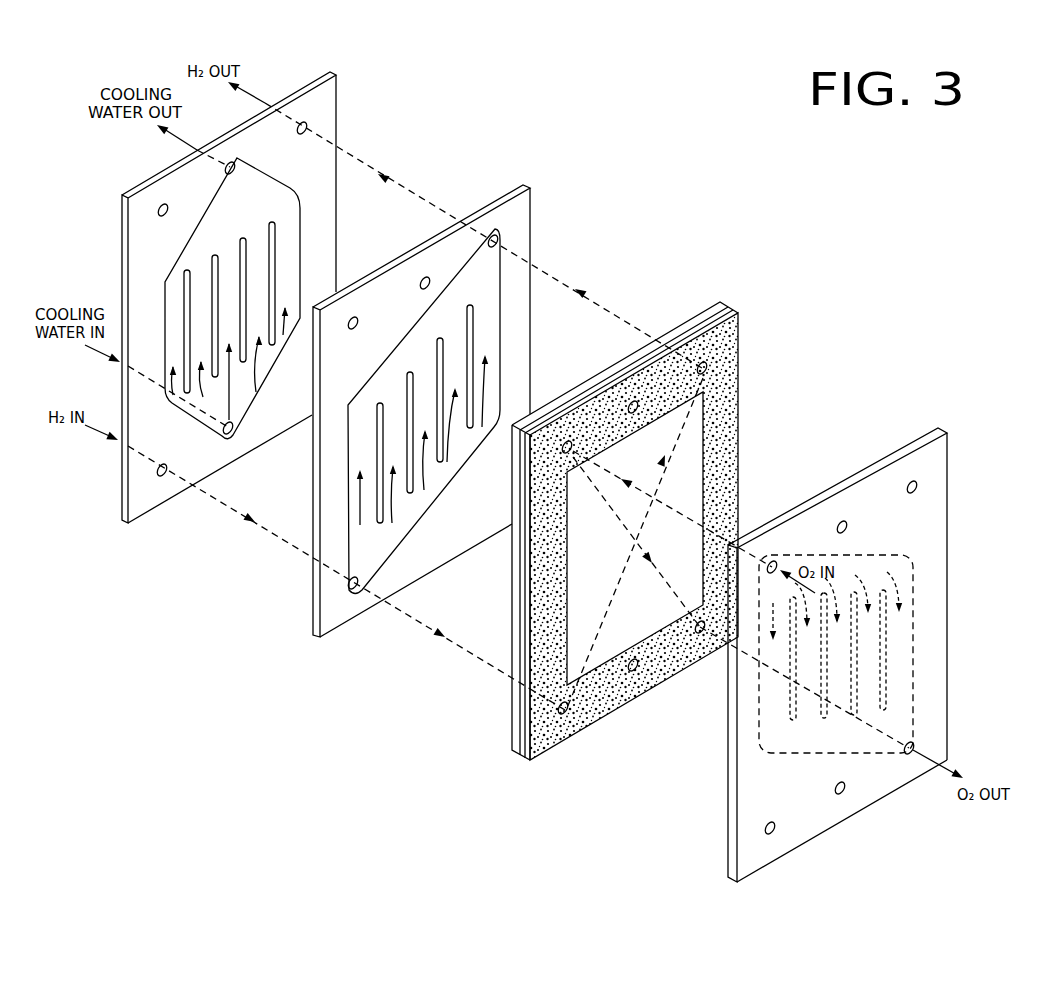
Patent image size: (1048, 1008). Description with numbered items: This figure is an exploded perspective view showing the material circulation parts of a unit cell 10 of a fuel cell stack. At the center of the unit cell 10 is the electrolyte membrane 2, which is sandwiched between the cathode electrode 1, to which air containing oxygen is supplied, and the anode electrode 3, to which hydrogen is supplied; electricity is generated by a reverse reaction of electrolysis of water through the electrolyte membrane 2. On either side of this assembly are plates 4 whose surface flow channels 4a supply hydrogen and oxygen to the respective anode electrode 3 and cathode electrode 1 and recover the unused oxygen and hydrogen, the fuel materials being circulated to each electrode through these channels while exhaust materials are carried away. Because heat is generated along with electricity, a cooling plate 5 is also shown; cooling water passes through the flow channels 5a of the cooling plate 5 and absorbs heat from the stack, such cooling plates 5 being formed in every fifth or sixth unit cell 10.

The cathode electrode 1 is at (648, 617).
The electrolyte membrane 2 is at (517, 753).
The anode electrode 3 is at (510, 638).
The separator plate 4 is at (642, 551).
The surface flow channels 4a is at (372, 546).
The cooling plates 5 is at (198, 333).
The flow channels 5a is at (173, 284).
The unit cell 10 is at (939, 406).